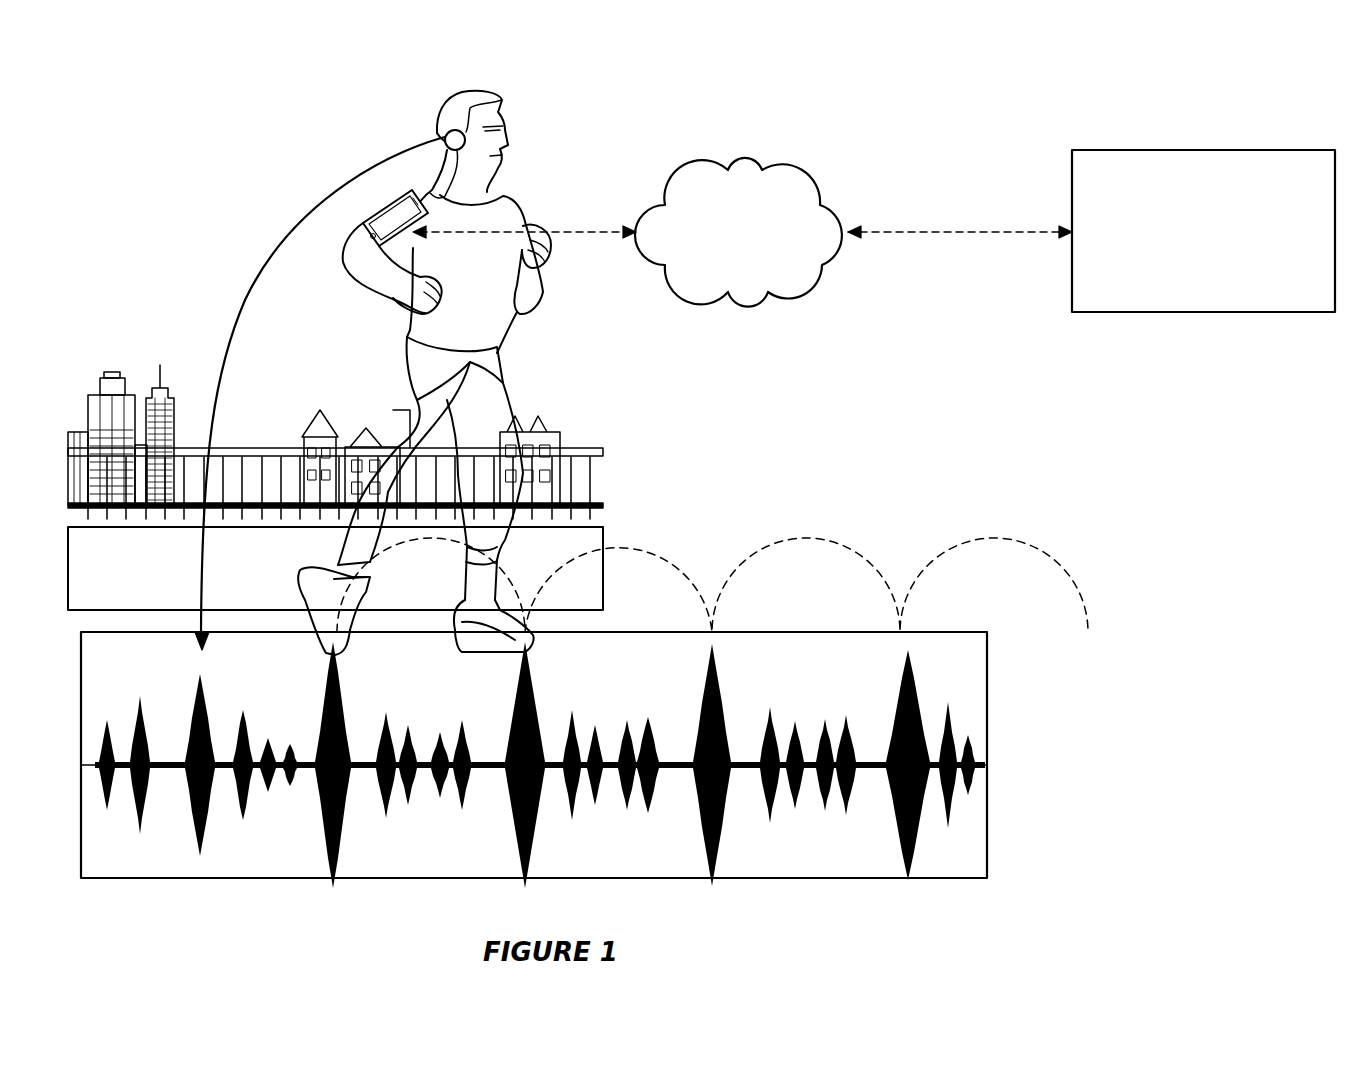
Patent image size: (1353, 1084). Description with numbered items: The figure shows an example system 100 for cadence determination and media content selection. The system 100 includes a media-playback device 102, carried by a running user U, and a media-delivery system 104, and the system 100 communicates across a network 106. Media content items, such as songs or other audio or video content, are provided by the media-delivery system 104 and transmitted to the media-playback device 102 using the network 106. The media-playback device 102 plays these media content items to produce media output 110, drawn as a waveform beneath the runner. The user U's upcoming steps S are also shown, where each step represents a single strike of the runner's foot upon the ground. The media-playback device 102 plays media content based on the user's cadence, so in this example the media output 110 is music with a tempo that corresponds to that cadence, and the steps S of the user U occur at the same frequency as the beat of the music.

The system 100 is at (207, 83).
The media-playback device 102 is at (395, 196).
The media-delivery system 104 is at (1146, 150).
The network 106 is at (746, 160).
The media output 110 is at (988, 714).
The user U is at (517, 82).
The steps S is at (813, 533).